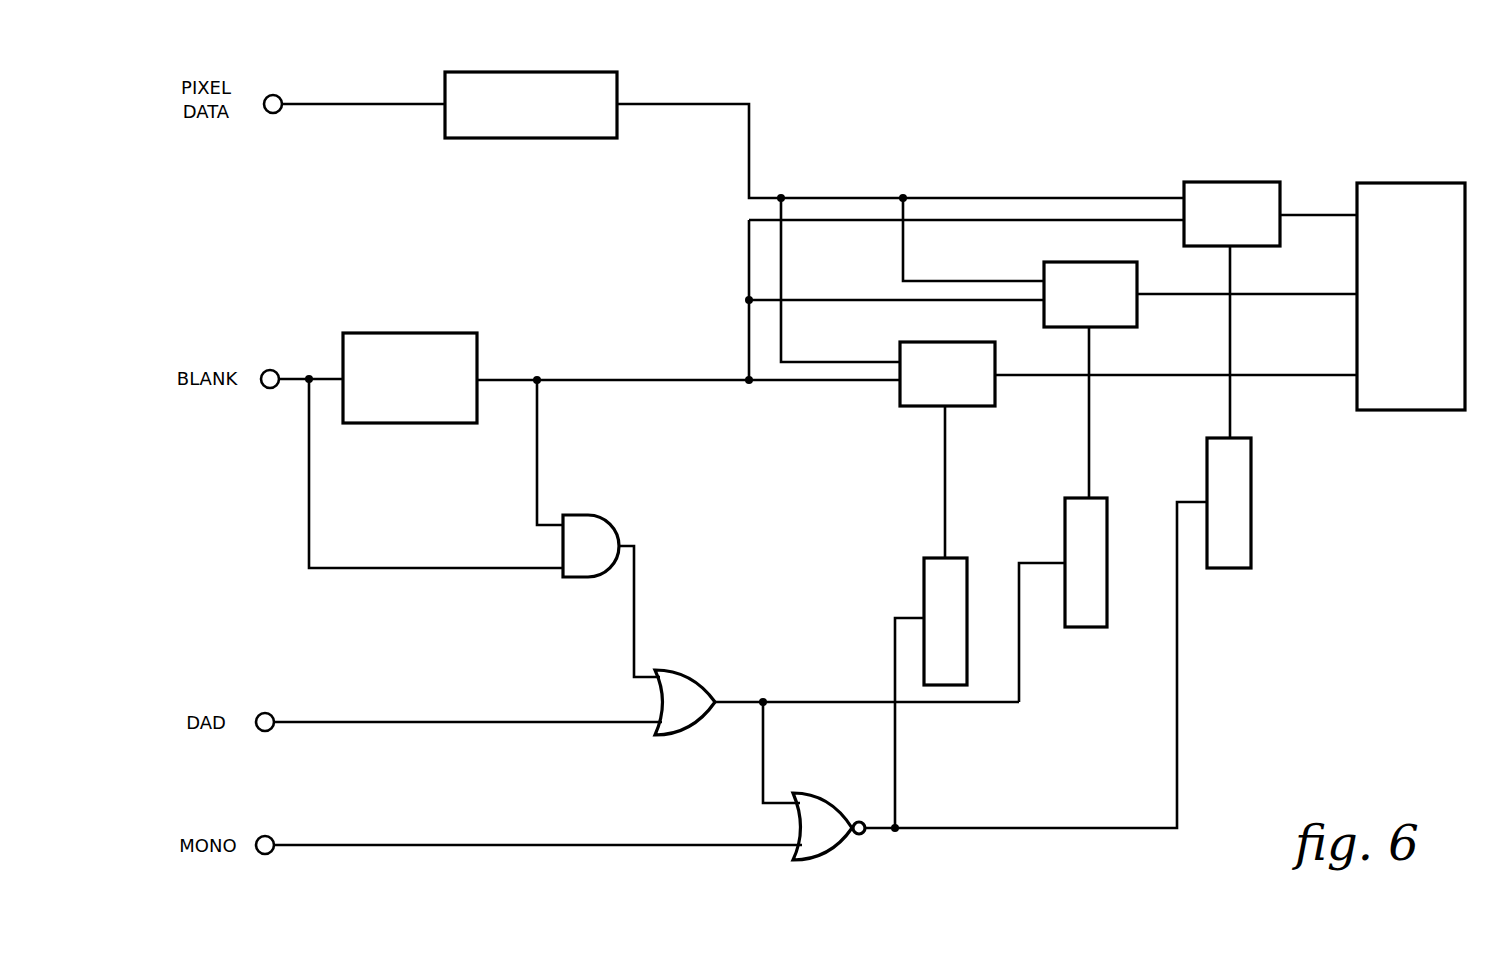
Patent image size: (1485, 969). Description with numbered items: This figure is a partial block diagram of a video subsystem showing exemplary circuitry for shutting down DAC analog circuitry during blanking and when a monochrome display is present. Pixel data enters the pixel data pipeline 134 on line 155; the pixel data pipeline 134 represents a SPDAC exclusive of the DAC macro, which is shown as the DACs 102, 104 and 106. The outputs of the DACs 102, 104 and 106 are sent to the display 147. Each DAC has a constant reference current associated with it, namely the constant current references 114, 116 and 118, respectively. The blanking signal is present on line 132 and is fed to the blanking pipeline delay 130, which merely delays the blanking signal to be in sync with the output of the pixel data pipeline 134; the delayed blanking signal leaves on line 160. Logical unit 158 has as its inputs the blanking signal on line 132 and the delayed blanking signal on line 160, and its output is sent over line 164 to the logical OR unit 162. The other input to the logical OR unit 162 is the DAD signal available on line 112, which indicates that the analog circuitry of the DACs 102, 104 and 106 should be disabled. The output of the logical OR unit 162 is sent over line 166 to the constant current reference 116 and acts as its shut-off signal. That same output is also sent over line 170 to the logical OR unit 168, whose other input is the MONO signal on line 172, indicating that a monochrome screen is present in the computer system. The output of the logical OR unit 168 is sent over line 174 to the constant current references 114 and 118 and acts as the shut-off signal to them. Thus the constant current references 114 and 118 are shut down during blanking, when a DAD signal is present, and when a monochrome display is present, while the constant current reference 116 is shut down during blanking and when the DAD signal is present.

The DAC 102 is at (1225, 182).
The DAC 104 is at (1138, 307).
The DAC 106 is at (995, 392).
The line 112 is at (310, 720).
The constant current reference 114 is at (1251, 533).
The constant current reference 116 is at (1107, 577).
The constant current reference 118 is at (924, 587).
The blanking pipeline delay 130 is at (400, 333).
The line 132 is at (290, 379).
The pixel data pipeline 134 is at (445, 88).
The display 147 is at (1415, 183).
The line 155 is at (368, 105).
The logical AND unit 158 is at (593, 515).
The line 160 is at (537, 435).
The logical OR unit 162 is at (697, 673).
The line 164 is at (640, 612).
The line 166 is at (1019, 633).
The logical OR unit 168 is at (843, 797).
The line 170 is at (763, 752).
The line 172 is at (333, 845).
The line 174 is at (878, 832).